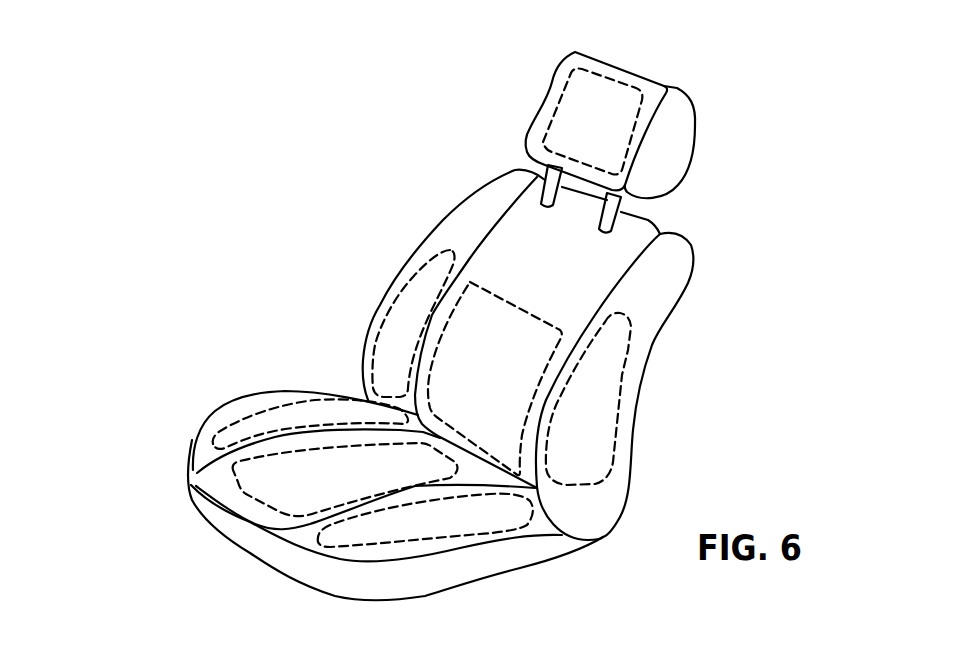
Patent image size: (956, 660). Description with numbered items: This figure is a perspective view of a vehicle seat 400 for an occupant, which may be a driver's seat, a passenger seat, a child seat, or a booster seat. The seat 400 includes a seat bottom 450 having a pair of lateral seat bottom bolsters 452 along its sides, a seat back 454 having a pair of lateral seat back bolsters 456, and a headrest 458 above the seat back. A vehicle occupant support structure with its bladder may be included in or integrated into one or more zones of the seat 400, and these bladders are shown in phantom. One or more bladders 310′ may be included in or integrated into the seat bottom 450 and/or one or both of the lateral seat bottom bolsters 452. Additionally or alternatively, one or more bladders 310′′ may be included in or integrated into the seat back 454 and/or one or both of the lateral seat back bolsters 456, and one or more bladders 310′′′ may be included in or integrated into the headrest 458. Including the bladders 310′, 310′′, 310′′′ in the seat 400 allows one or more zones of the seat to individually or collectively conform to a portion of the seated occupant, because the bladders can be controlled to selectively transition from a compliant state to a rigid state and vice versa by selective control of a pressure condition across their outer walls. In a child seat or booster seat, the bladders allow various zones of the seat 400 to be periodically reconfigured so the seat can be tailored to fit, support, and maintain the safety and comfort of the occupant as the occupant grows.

The seat 400 is at (322, 160).
The seat bottom 450 is at (220, 523).
The lateral seat bottom bolsters 452 is at (257, 394).
The seat back 454 is at (653, 333).
The lateral seat back bolsters 456 is at (417, 247).
The headrest 458 is at (697, 133).
The bladders 310′ is at (318, 400).
The bladders 310′′ is at (389, 306).
The bladders 310′′′ is at (612, 82).